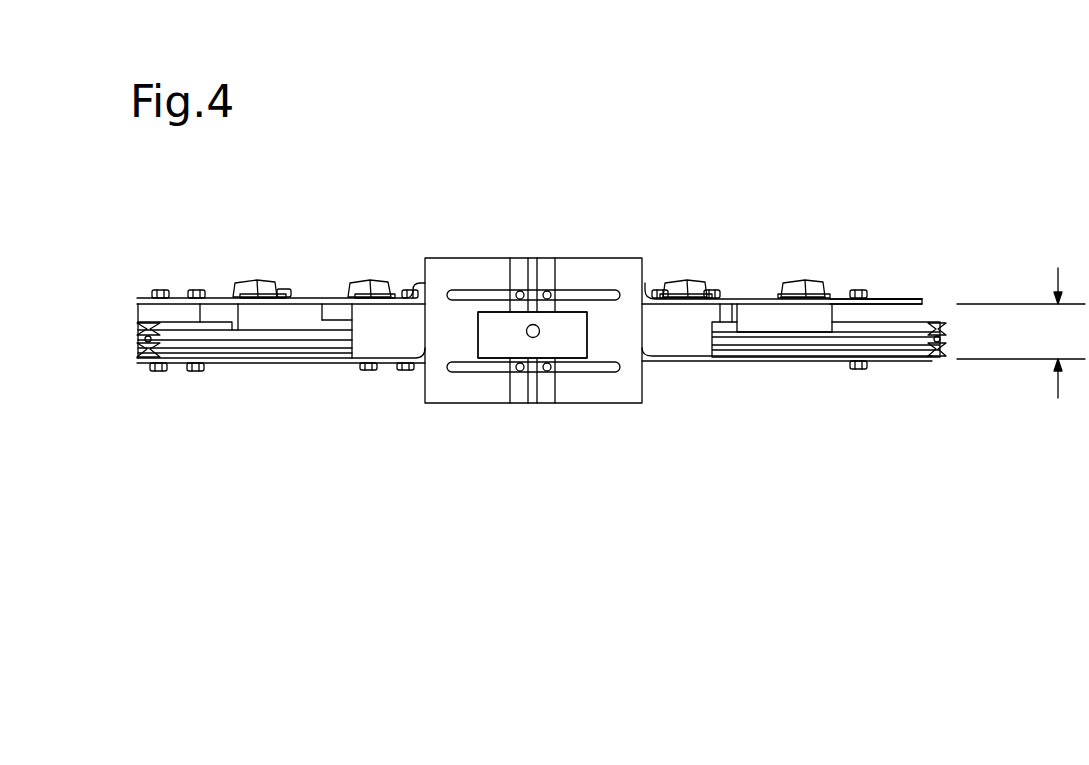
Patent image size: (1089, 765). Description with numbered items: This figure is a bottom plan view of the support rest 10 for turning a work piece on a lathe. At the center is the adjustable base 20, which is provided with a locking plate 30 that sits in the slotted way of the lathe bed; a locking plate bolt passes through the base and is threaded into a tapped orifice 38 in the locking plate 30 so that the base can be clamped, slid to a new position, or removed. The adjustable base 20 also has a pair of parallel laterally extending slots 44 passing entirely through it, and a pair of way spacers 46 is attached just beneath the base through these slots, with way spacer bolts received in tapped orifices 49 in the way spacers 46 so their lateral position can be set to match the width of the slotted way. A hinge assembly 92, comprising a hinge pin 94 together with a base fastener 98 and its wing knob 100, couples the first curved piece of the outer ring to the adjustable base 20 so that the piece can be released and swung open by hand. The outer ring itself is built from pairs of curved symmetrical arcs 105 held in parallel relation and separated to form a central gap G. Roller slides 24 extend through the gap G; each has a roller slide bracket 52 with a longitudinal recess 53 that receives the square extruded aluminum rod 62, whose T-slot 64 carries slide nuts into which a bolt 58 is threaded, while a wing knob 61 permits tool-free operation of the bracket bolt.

The support rest 10 is at (920, 220).
The adjustable base 20 is at (437, 391).
The roller slide 24 is at (845, 305).
The locking plate 30 is at (572, 348).
The tapped orifice 38 is at (530, 336).
The laterally extending slots 44 is at (608, 365).
The way spacers 46 is at (547, 263).
The tapped orifices 49 is at (546, 370).
The roller slide bracket 52 is at (770, 305).
The longitudinal recess 53 is at (877, 305).
The bolt 58 is at (858, 372).
The wing knob 61 is at (255, 282).
The extruded aluminum rod 62 is at (753, 348).
The T-slot 64 is at (940, 340).
The hinge assembly 92 is at (365, 160).
The hinge pin 94 is at (400, 367).
The base fastener 98 is at (365, 367).
The wing knob 100 is at (358, 287).
The curved symmetrical arcs 105 is at (320, 358).
The central gap G is at (1021, 333).